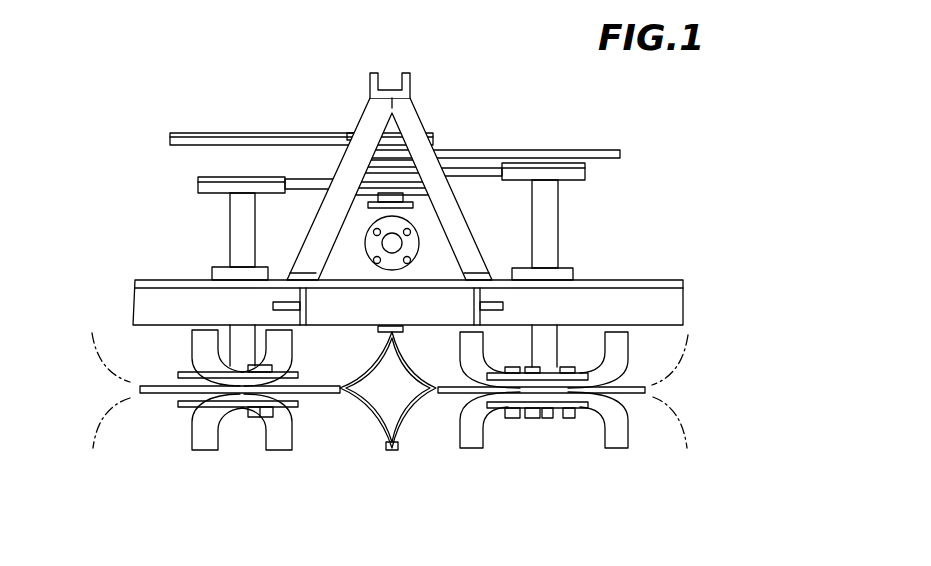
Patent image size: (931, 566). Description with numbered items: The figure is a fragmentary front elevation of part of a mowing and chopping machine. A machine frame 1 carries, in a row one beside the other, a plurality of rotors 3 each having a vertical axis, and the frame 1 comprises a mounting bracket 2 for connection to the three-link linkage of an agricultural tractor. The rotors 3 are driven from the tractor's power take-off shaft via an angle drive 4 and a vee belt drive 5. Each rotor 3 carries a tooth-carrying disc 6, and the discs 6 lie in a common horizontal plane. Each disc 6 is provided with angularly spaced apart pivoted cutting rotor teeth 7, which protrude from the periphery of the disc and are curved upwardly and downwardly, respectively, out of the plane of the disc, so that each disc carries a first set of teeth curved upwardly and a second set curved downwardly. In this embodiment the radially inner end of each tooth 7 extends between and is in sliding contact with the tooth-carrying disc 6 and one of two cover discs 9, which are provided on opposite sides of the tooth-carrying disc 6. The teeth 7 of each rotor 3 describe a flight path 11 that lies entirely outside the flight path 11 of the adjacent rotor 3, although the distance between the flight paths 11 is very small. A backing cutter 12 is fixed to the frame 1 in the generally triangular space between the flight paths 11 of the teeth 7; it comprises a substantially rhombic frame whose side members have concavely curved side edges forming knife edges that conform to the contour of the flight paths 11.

The machine frame 1 is at (645, 305).
The mounting bracket 2 is at (417, 147).
The rotor 3 is at (226, 454).
The angle drive 4 is at (428, 233).
The vee belt drive 5 is at (295, 183).
The tooth-carrying disc 6 is at (317, 388).
The cutting rotor teeth 7 is at (278, 347).
The cover disc 9 is at (545, 405).
The flight path 11 is at (130, 382).
The backing cutter 12 is at (386, 450).